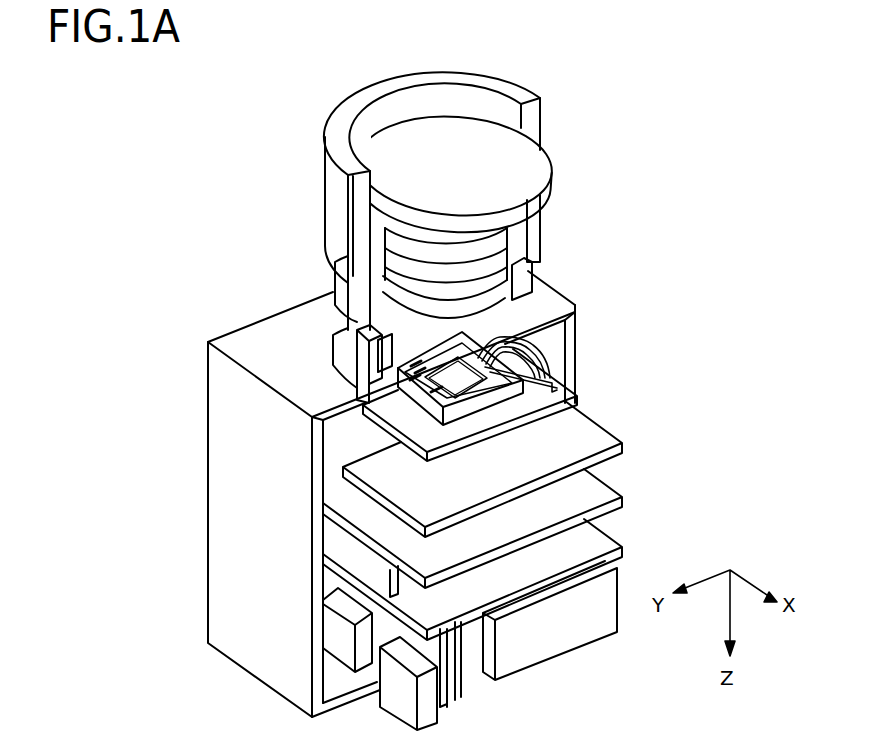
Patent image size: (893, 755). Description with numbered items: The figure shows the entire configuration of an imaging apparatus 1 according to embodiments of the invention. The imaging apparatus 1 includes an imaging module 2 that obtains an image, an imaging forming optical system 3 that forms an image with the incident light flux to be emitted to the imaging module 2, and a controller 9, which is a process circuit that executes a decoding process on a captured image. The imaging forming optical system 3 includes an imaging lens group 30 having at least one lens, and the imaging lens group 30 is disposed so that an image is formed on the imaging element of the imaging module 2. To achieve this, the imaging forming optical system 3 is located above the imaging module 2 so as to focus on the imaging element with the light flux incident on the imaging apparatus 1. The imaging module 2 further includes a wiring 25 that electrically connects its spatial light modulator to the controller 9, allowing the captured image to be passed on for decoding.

The imaging apparatus 1 is at (222, 165).
The imaging module 2 is at (535, 369).
The imaging forming optical system 3 is at (554, 136).
The controller 9 is at (600, 428).
The wiring 25 is at (543, 342).
The imaging lens group 30 is at (438, 178).